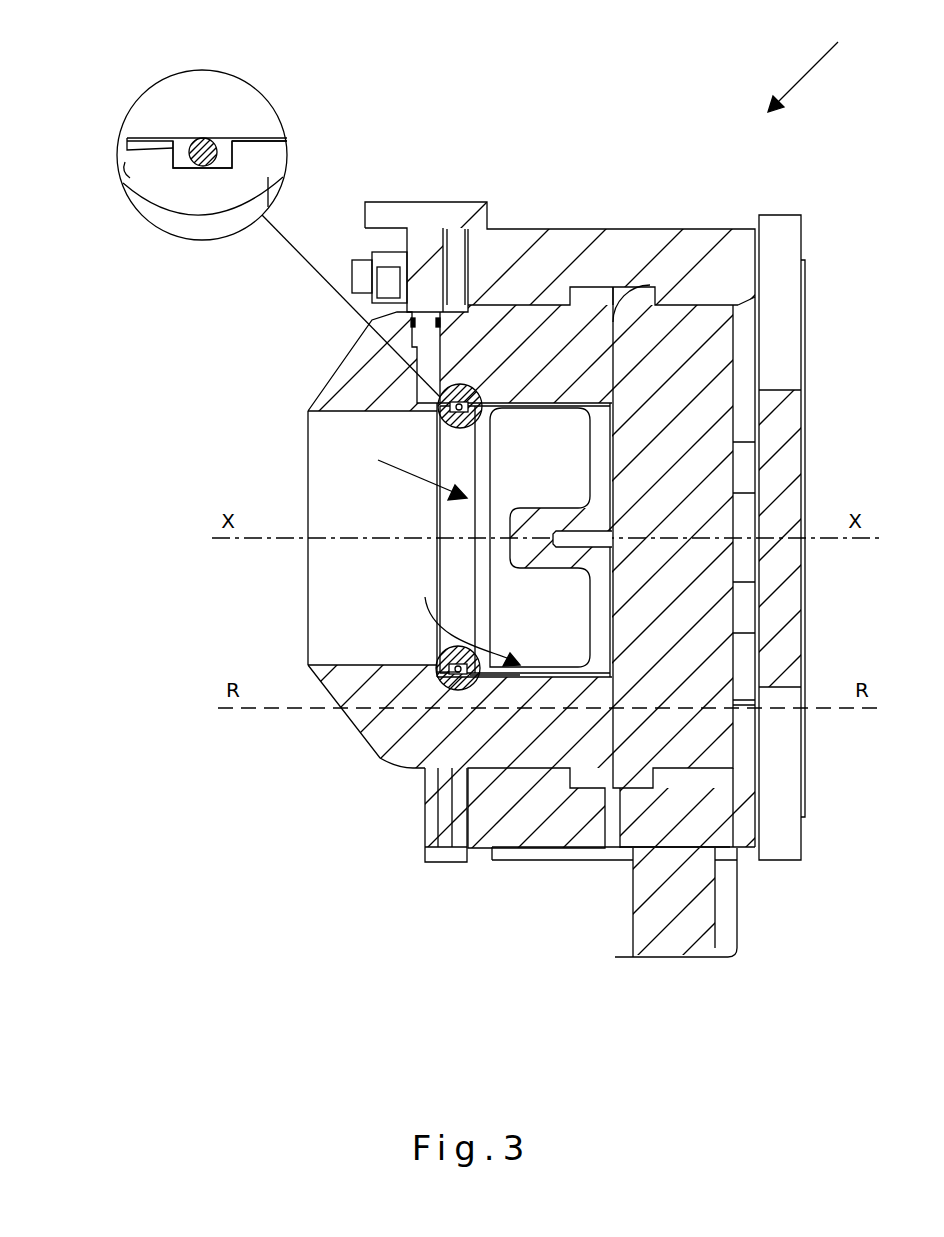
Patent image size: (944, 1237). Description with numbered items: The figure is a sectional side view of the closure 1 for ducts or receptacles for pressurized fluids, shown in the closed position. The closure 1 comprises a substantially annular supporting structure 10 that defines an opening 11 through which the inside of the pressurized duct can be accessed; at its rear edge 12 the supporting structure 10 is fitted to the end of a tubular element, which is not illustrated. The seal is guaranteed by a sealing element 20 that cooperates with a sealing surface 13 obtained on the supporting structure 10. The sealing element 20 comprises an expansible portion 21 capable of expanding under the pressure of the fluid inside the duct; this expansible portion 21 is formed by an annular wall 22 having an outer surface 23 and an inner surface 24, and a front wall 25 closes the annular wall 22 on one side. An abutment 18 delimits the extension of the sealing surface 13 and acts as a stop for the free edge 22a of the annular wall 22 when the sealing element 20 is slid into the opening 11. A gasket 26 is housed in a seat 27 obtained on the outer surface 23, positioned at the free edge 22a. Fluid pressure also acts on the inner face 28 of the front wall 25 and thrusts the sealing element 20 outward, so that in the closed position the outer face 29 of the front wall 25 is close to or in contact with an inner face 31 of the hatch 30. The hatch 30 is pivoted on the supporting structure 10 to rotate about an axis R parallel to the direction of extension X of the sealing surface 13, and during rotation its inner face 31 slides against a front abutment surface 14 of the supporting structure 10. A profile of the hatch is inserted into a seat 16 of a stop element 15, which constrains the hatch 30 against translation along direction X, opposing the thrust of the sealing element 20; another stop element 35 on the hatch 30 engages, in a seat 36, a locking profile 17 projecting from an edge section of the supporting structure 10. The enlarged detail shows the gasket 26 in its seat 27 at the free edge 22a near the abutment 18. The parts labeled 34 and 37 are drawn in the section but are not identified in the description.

The closure 1 is at (810, 64).
The supporting structure 10 is at (527, 322).
The opening 11 is at (357, 523).
The rear edge 12 is at (318, 395).
The sealing surface 13 is at (458, 658).
The front abutment surface 14 is at (645, 288).
The stop element 15 is at (527, 832).
The seat 16 is at (638, 770).
The locking profile 17 is at (585, 302).
The abutment 18 is at (125, 180).
The sealing element 20 is at (400, 469).
The expansible portion 21 is at (463, 619).
The annular wall 22 is at (513, 412).
The free edge 22a is at (123, 155).
The outer surface 23 is at (278, 138).
The inner surface 24 is at (557, 412).
The front wall 25 is at (600, 598).
The gasket 26 is at (203, 167).
The seat 27 is at (180, 147).
The inner face 28 is at (590, 627).
The outer face 29 is at (613, 458).
The hatch 30 is at (700, 370).
The inner face 31 is at (608, 773).
The lower block 34 is at (638, 770).
The stop element 35 is at (721, 268).
The seat 36 is at (612, 300).
The cover plate 37 is at (787, 755).